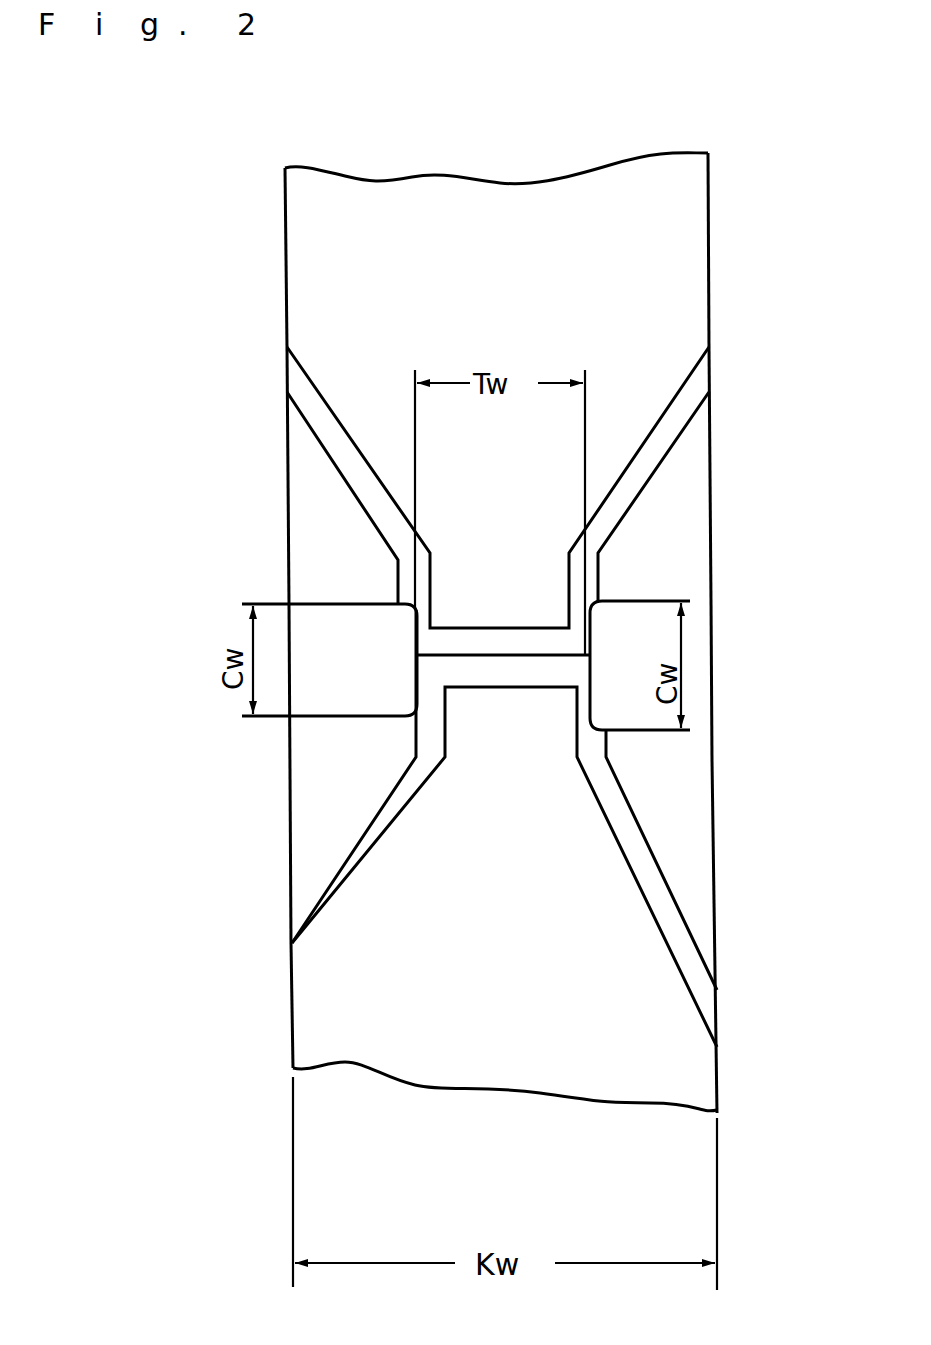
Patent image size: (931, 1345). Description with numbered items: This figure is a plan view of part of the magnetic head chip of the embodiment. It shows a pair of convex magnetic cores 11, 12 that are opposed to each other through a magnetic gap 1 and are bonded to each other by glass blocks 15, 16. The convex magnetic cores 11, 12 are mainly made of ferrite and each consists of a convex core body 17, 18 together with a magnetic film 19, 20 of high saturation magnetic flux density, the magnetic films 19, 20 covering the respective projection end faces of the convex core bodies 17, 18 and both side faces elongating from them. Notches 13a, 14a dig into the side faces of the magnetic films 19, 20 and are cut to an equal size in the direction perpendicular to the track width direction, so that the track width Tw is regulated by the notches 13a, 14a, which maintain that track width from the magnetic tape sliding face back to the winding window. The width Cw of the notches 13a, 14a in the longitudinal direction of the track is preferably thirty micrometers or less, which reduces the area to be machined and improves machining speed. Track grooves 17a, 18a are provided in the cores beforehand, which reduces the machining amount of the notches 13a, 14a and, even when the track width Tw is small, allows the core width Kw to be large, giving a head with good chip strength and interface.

The magnetic gap 1 is at (487, 657).
The convex magnetic core 11 is at (383, 1075).
The convex magnetic core 12 is at (412, 177).
The notch 13a is at (414, 653).
The notch 14a is at (593, 670).
The glass block 15 is at (305, 823).
The glass block 16 is at (660, 661).
The convex core body 17 is at (323, 1032).
The track groove 17a is at (345, 887).
The convex core body 18 is at (678, 270).
The track groove 18a is at (350, 465).
The magnetic film 19 is at (617, 807).
The magnetic film 20 is at (613, 513).